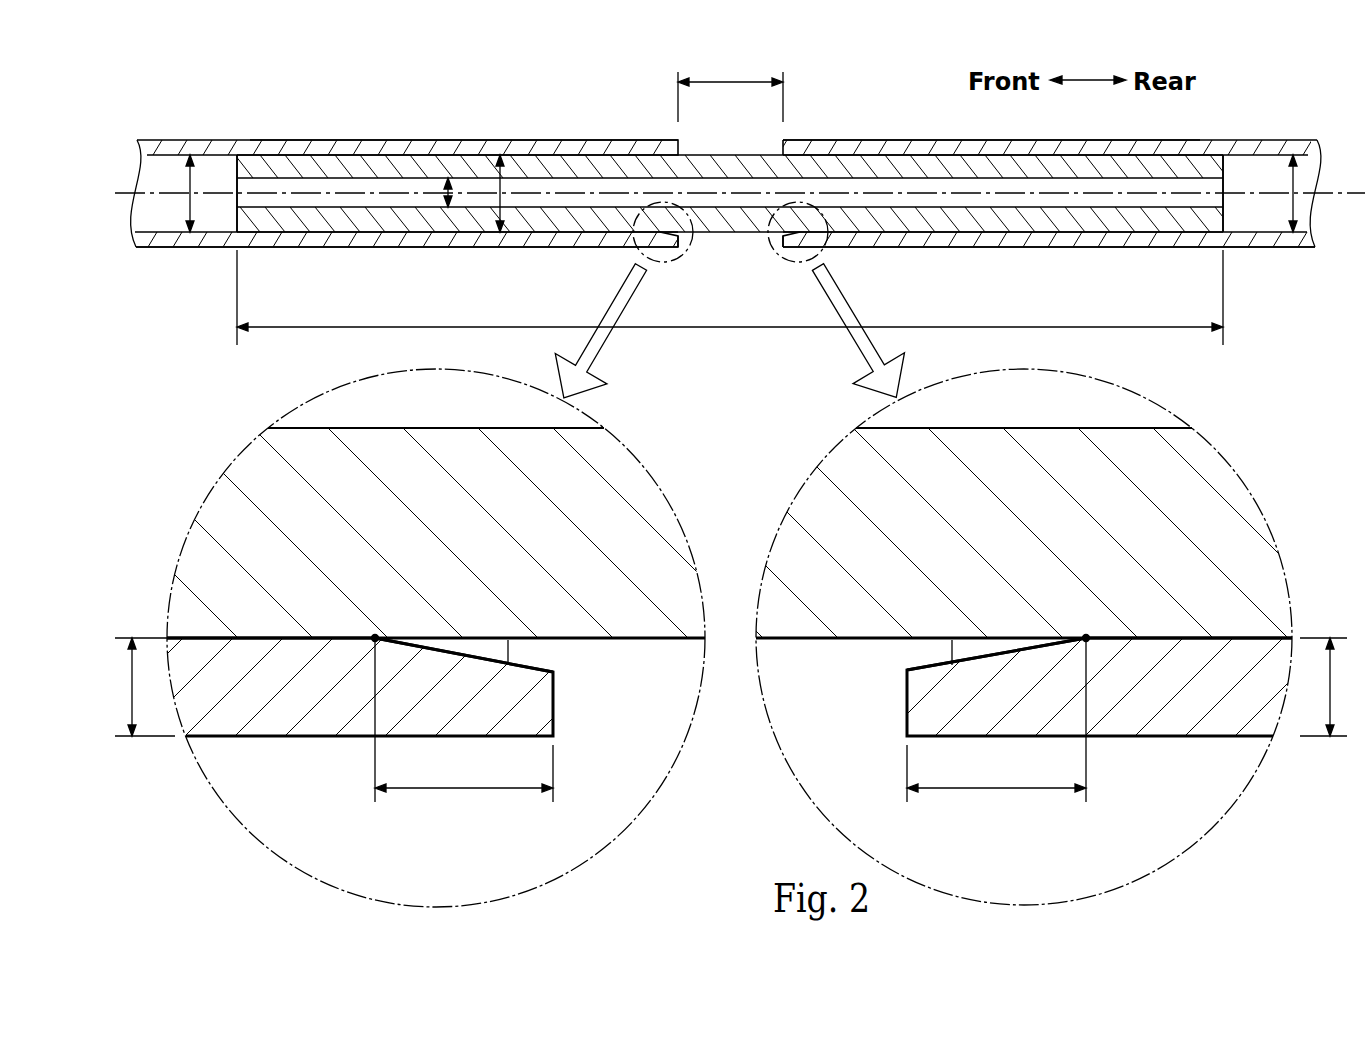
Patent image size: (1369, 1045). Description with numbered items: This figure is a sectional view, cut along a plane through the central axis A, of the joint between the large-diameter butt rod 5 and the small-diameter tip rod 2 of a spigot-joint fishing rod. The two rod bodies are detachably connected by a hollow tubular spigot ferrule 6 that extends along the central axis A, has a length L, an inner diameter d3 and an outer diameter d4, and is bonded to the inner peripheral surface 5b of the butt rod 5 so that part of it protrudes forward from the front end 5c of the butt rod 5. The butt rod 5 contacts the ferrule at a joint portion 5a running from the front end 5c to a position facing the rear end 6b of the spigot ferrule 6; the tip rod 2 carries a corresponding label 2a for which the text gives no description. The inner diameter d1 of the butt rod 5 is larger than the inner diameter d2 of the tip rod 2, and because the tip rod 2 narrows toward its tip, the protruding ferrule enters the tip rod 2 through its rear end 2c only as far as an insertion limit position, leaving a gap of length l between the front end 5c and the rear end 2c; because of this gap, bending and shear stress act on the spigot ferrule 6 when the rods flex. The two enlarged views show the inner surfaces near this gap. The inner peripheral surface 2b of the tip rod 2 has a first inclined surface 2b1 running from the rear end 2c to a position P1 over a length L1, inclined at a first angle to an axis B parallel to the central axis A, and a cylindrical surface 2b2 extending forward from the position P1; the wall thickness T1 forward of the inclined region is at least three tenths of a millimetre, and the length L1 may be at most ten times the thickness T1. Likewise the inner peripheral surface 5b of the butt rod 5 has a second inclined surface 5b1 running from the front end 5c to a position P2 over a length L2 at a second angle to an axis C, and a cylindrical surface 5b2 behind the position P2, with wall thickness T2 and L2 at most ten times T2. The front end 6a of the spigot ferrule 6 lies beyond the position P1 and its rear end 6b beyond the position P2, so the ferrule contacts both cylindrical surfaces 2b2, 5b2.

The tip rod 2 is at (172, 133).
The outer peripheral surface of front tube 2a is at (633, 140).
The inner peripheral surface 2b is at (172, 227).
The first inclined surface 2b1 is at (540, 662).
The cylindrical surface 2b2 is at (270, 638).
The rear end 2c is at (686, 238).
The butt rod 5 is at (1286, 133).
The joint portion 5a is at (830, 140).
The inner peripheral surface 5b is at (1256, 222).
The second inclined surface 5b1 is at (920, 662).
The cylindrical surface 5b2 is at (1192, 638).
The front end 5c is at (780, 238).
The spigot ferrule 6 is at (735, 160).
The front end 6a is at (238, 158).
The rear end 6b is at (1228, 165).
The central axis A is at (1340, 193).
The axis B is at (655, 645).
The axis C is at (808, 640).
The inner diameter d1 is at (1298, 205).
The inner diameter d2 is at (196, 205).
The inner diameter d3 is at (452, 205).
The outer diameter d4 is at (505, 205).
The length L is at (730, 308).
The length of the gap l is at (730, 86).
The length L1 is at (464, 730).
The length L2 is at (996, 730).
The thickness T1 is at (134, 687).
The thickness T2 is at (1332, 687).
The front end position P1 is at (375, 640).
The rear end position P2 is at (1086, 640).